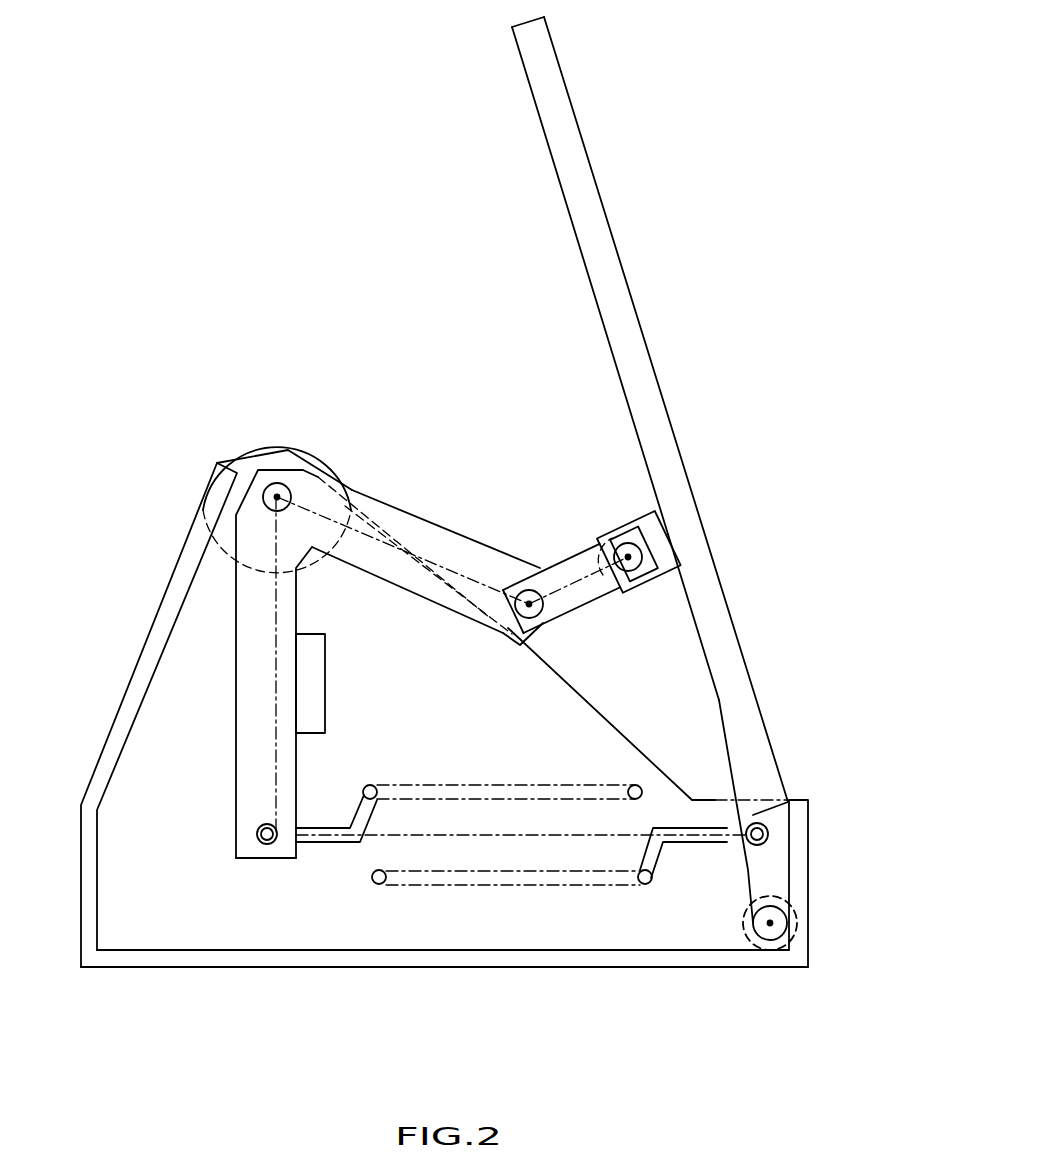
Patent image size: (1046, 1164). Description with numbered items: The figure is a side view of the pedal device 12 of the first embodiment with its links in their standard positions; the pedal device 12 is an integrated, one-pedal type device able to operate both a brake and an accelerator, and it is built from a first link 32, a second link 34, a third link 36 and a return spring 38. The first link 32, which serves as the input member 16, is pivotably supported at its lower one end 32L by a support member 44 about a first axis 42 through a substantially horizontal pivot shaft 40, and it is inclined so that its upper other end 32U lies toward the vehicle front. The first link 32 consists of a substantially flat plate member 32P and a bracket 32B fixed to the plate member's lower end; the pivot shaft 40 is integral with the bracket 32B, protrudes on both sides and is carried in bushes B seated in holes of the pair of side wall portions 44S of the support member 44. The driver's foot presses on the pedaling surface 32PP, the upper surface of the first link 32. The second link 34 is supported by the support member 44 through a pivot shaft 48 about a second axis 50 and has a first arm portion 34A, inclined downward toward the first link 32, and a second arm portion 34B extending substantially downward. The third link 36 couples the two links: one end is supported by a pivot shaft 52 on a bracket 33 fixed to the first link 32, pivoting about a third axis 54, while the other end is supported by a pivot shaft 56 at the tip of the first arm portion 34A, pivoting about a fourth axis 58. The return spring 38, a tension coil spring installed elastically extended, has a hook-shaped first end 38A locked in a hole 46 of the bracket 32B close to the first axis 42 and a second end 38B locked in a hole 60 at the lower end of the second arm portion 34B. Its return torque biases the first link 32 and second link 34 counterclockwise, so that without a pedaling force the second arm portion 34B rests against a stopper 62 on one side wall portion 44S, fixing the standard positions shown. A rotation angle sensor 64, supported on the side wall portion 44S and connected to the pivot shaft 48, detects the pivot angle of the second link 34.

The pedal device 12 is at (257, 140).
The input member 16 is at (688, 396).
The first link 32 is at (673, 487).
The other end of first link 32U is at (545, 46).
The plate member 32P is at (545, 113).
The pedaling surface 32PP is at (605, 205).
The one end of first link 32L is at (770, 745).
The bracket 32B is at (800, 866).
The bracket 33 is at (652, 517).
The second link 34 is at (314, 659).
The first arm portion 34A is at (430, 520).
The second arm portion 34B is at (247, 718).
The third link 36 is at (565, 555).
The return spring 38 is at (522, 906).
The first end of return spring 38A is at (750, 843).
The second end of return spring 38B is at (267, 845).
The pivot shaft 40 is at (760, 930).
The first axis 42 is at (772, 926).
The support member 44 is at (425, 751).
The side wall portion 44S is at (185, 940).
The hole 46 is at (768, 830).
The pivot shaft 48 is at (235, 487).
The second axis 50 is at (280, 484).
The pivot shaft 52 is at (613, 530).
The third axis 54 is at (642, 557).
The pivot shaft 56 is at (517, 627).
The fourth axis 58 is at (548, 625).
The hole 60 is at (258, 830).
The stopper 62 is at (326, 680).
The rotation angle sensor 64 is at (250, 425).
The bush B is at (800, 925).